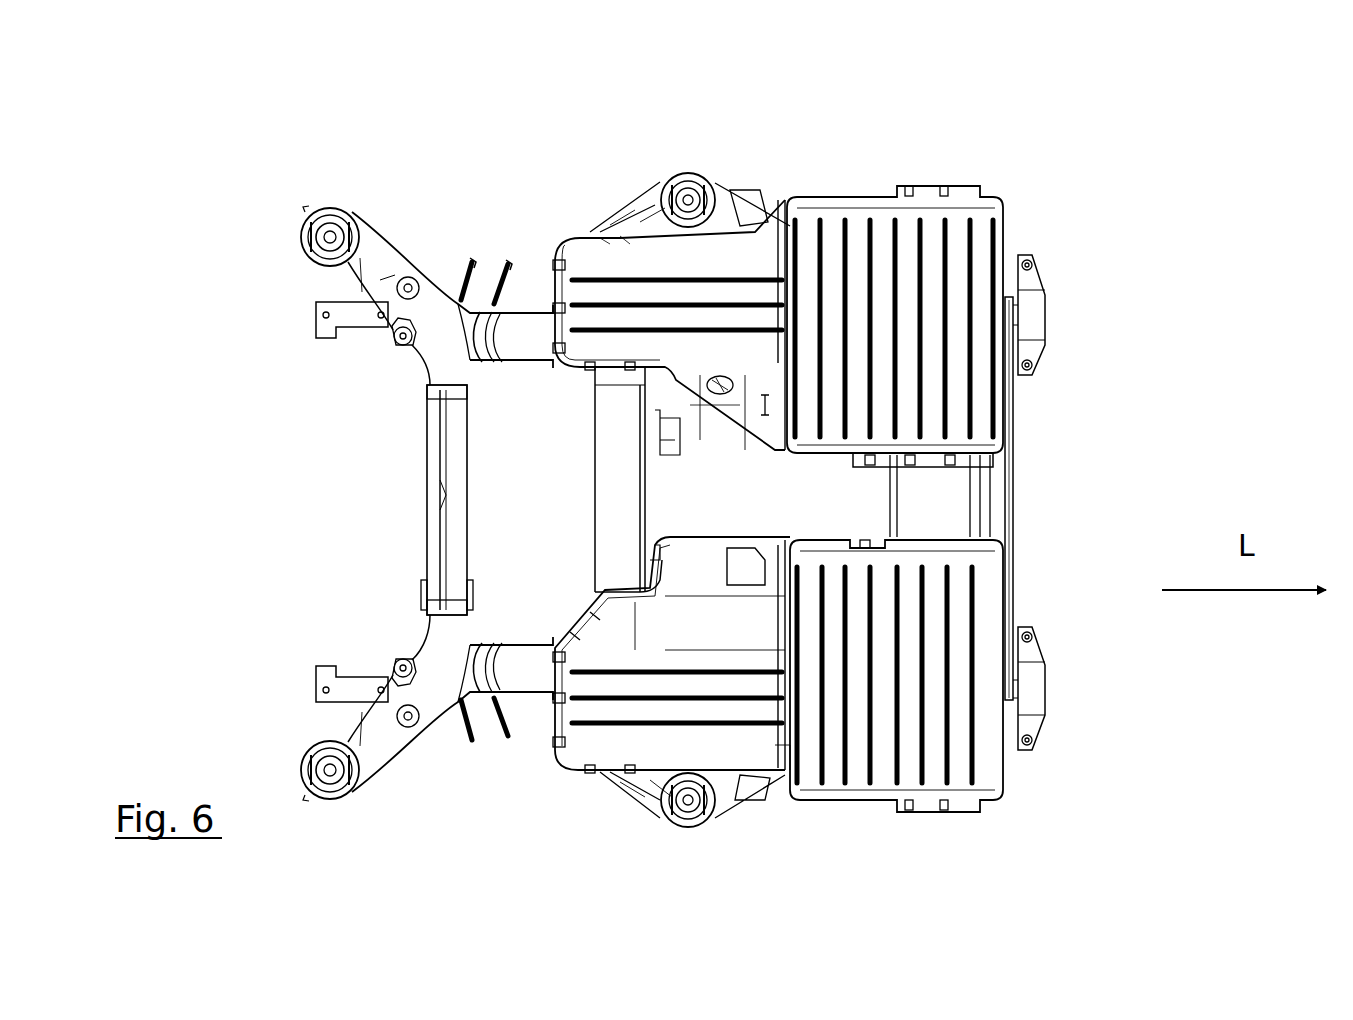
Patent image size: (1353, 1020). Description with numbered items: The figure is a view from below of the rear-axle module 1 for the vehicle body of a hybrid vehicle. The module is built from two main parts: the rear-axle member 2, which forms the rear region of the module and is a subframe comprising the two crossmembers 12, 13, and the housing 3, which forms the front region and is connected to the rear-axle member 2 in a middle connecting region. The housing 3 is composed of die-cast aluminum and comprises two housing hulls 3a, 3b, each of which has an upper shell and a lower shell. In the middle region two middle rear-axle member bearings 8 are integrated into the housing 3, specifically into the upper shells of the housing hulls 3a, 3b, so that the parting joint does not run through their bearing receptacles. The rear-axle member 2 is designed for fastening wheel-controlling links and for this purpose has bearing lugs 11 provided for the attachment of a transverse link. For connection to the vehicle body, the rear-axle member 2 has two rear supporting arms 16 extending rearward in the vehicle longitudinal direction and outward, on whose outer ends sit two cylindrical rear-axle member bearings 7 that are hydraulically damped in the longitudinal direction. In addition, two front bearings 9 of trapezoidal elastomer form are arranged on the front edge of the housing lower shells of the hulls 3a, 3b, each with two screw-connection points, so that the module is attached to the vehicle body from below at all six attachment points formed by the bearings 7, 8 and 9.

The rear-axle module 1 is at (297, 147).
The rear-axle member 2 is at (440, 226).
The housing 3 is at (1026, 405).
The housing hull 3a is at (960, 242).
The housing hull 3b is at (998, 775).
The rear-axle member bearing 7 is at (330, 770).
The middle rear-axle member bearing 8 is at (682, 178).
The front bearing 9 is at (1038, 310).
The bearing lug 11 is at (484, 282).
The crossmember 12 is at (434, 492).
The crossmember 13 is at (637, 503).
The rear supporting arm 16 is at (387, 286).